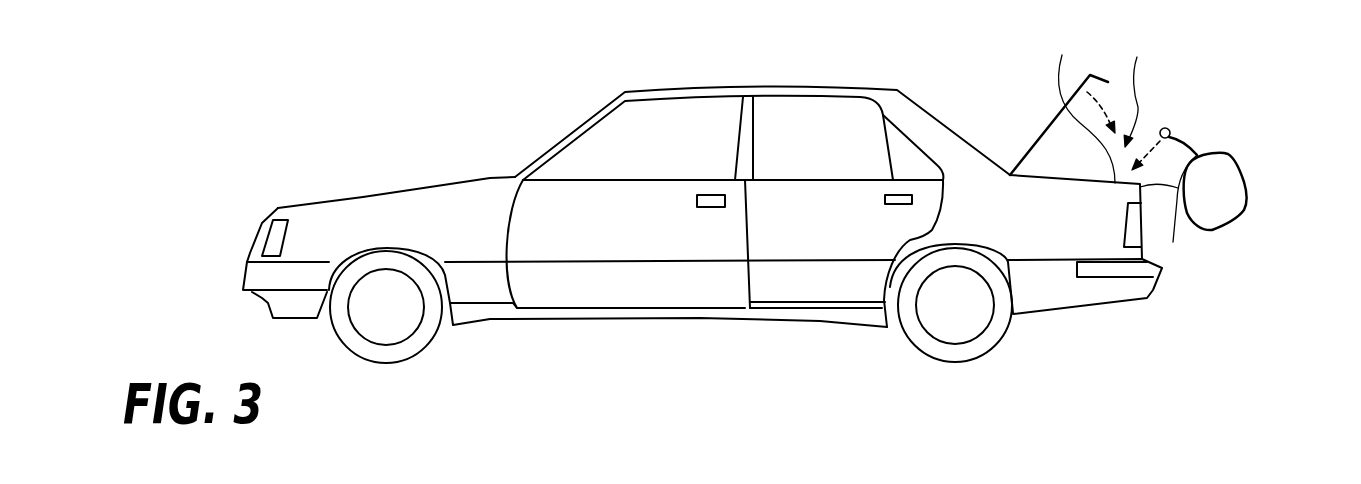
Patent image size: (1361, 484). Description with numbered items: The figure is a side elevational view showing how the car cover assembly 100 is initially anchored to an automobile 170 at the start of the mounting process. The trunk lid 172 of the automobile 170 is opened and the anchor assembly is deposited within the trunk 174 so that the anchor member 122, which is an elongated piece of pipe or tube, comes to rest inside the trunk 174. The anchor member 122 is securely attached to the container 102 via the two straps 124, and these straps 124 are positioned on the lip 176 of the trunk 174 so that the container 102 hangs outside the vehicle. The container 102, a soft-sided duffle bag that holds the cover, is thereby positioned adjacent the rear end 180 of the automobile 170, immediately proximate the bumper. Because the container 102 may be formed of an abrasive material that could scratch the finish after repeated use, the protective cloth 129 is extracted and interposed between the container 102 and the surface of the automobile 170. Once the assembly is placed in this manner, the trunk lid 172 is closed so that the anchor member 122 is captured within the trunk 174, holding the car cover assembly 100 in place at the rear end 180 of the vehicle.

The automobile 170 is at (737, 62).
The trunk lid 172 is at (1042, 127).
The trunk 174 is at (1147, 94).
The lip 176 is at (1081, 107).
The anchor member 122 is at (1165, 128).
The straps 124 is at (1180, 143).
The car cover assembly 100 is at (1232, 145).
The container 102 is at (1247, 210).
The protective cloth 129 is at (1138, 188).
The rear end 180 is at (1172, 277).